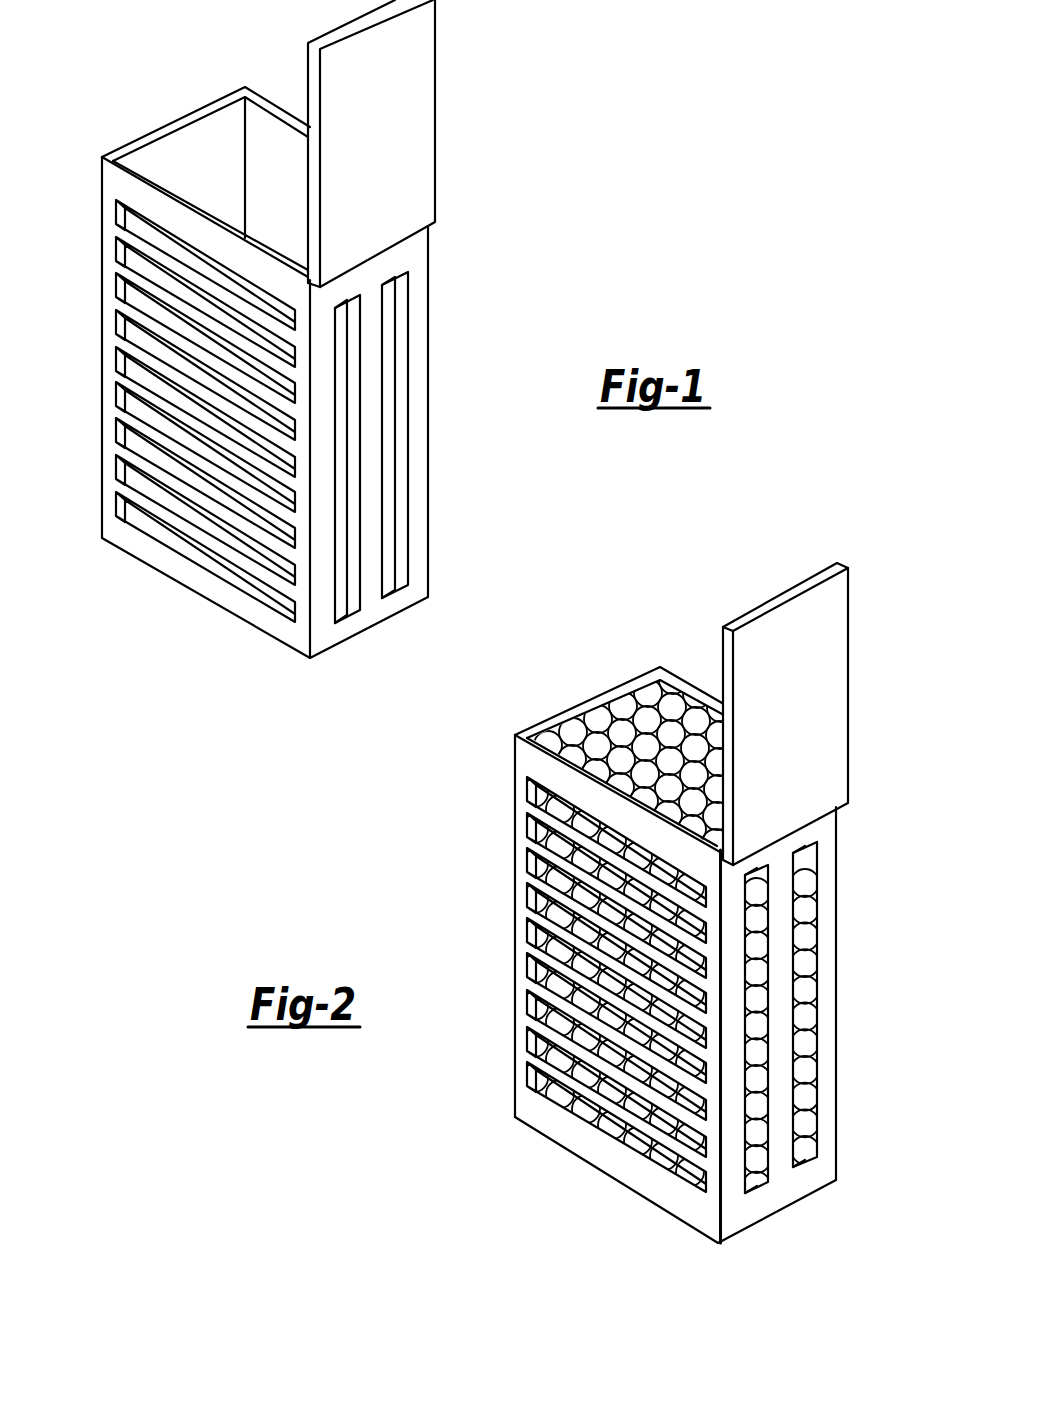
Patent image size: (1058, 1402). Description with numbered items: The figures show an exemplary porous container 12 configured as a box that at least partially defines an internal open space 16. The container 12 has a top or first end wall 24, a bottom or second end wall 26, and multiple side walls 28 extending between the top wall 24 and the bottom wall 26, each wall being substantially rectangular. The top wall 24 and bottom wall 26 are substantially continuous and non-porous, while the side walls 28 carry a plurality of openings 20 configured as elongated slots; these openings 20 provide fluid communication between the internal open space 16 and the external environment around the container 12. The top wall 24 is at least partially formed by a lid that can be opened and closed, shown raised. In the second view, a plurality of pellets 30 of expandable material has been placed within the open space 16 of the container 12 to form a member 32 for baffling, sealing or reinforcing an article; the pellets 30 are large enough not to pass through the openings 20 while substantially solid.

In FIG. 1, the porous container 12 is at (303, 397).
In FIG. 2, the porous container 12 is at (677, 948).
In FIG. 1, the internal open space 16 is at (186, 166).
In FIG. 1, the openings 20 is at (130, 333).
In FIG. 2, the openings 20 is at (543, 904).
In FIG. 1, the top wall 24 is at (387, 148).
In FIG. 2, the top wall 24 is at (807, 731).
In FIG. 1, the bottom wall 26 is at (280, 664).
In FIG. 2, the bottom wall 26 is at (652, 1225).
In FIG. 1, the side walls 28 is at (130, 427).
In FIG. 2, the side walls 28 is at (535, 1027).
In FIG. 2, the pellets 30 is at (672, 703).
In FIG. 2, the member 32 is at (680, 929).